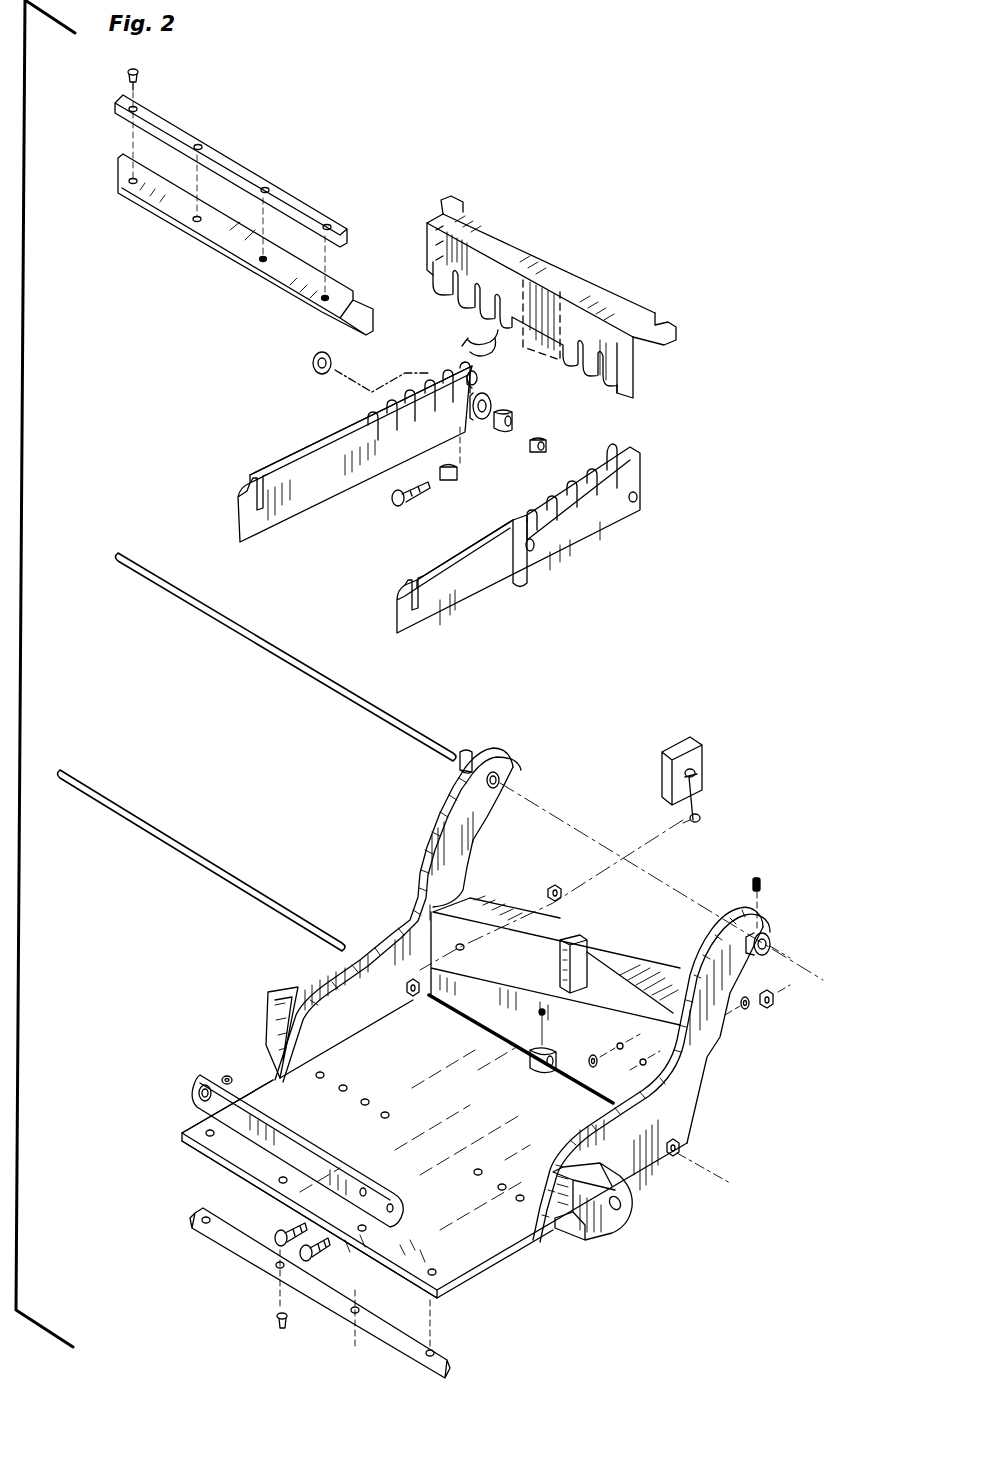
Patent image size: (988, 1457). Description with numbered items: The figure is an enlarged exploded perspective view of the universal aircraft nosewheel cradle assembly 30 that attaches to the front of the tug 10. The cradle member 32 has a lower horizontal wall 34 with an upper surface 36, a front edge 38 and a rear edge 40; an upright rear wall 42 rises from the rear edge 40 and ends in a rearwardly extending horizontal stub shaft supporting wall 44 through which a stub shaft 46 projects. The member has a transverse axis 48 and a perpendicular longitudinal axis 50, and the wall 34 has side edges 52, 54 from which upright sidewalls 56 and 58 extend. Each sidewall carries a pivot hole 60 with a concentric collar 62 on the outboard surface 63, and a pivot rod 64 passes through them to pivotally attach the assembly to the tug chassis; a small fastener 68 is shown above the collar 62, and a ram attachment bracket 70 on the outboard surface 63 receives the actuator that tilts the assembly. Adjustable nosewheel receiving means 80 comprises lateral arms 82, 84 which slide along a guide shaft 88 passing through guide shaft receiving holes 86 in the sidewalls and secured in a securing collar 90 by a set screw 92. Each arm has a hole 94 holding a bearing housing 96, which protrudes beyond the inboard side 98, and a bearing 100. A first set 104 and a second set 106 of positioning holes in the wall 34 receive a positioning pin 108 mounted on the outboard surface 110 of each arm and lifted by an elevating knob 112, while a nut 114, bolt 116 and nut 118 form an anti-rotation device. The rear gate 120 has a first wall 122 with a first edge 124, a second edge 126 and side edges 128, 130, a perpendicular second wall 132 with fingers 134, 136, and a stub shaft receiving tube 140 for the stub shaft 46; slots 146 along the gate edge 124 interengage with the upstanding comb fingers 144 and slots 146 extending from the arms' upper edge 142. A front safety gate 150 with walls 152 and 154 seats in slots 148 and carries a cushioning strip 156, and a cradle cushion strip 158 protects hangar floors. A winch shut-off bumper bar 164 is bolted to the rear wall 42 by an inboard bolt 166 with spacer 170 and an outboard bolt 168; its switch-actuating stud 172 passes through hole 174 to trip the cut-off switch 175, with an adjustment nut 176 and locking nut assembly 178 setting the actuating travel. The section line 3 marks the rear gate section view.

The cradle assembly 30 is at (105, 1278).
The cradle member 32 is at (210, 1012).
The lower horizontal wall 34 is at (452, 1275).
The upper surface 36 is at (490, 1255).
The front edge 38 is at (257, 1182).
The rear edge 40 is at (495, 1030).
The rear wall 42 is at (492, 995).
The stub shaft supporting wall 44 is at (607, 970).
The stub shaft 46 is at (590, 960).
The transverse axis 48 is at (393, 1100).
The longitudinal axis 50 is at (397, 1053).
The side edge 52 is at (265, 1078).
The side edge 54 is at (528, 1245).
The sidewall 56 is at (412, 890).
The sidewall 58 is at (672, 1162).
The pivot hole 60 is at (500, 782).
The collar 62 is at (770, 940).
The outboard surface 63 is at (705, 1062).
The pivot rod 64 is at (305, 655).
The set screw 68 is at (762, 880).
The ram attachment bracket 70 is at (610, 1232).
The adjustable nosewheel receiving means 80 is at (722, 167).
The lateral arm 82 is at (355, 459).
The lateral arm 84 is at (552, 540).
The guide shaft receiving hole 86 is at (420, 1000).
The lateral arm guide shaft 88 is at (145, 815).
The guide shaft securing collar 90 is at (530, 1068).
The set screw 92 is at (540, 1016).
The guide shaft receiving hole 94 is at (640, 497).
The bearing housing 96 is at (490, 395).
The inboard side 98 is at (310, 482).
The bearing 100 is at (515, 414).
The first set of lateral arm positioning holes 104 is at (345, 1106).
The second set of lateral arm positioning holes 106 is at (478, 1193).
The positioning pin 108 is at (523, 583).
The outboard surface 110 is at (580, 527).
The elevating knob 112 is at (538, 552).
The nut 114 is at (480, 345).
The bolt 116 is at (428, 495).
The nut 118 is at (458, 478).
The rear gate 120 is at (534, 285).
The first wall 122 is at (428, 255).
The first edge 124 is at (482, 338).
The second edge 126 is at (470, 211).
The side edge 128 is at (428, 228).
The side edge 130 is at (640, 372).
The second wall 132 is at (500, 240).
The finger 134 is at (462, 203).
The finger 136 is at (655, 320).
The stub shaft receiving tube 140 is at (575, 275).
The upper edge 142 is at (302, 452).
The comb fingers 144 is at (368, 405).
The slots 146 is at (447, 297).
The slot 148 is at (255, 478).
The front safety gate 150 is at (176, 205).
The first wall 152 is at (285, 282).
The second wall 154 is at (345, 322).
The cushioning strip 156 is at (172, 130).
The cradle cushion strip 158 is at (395, 1345).
The winch shut-off bumper bar 164 is at (220, 1103).
The inboard bolt 166 is at (278, 1230).
The outboard bolt 168 is at (310, 1256).
The spacer 170 is at (592, 1052).
The switch-actuating stud 172 is at (222, 1078).
The hole 174 is at (465, 945).
The cut-off switch 175 is at (705, 768).
The adjustment nut 176 is at (553, 888).
The locking nut assembly 178 is at (763, 1020).
The section line 3 is at (462, 174).
The tug 10 is at (550, 440).